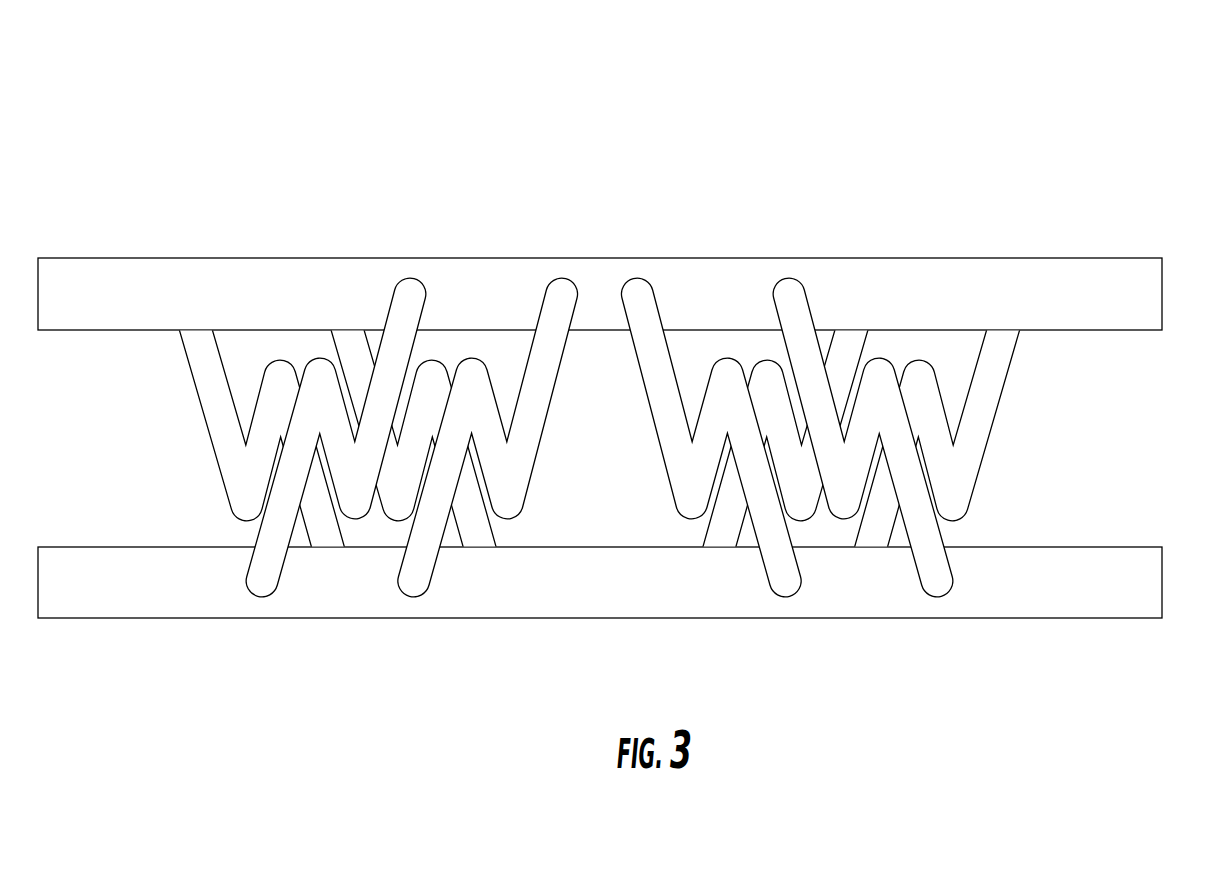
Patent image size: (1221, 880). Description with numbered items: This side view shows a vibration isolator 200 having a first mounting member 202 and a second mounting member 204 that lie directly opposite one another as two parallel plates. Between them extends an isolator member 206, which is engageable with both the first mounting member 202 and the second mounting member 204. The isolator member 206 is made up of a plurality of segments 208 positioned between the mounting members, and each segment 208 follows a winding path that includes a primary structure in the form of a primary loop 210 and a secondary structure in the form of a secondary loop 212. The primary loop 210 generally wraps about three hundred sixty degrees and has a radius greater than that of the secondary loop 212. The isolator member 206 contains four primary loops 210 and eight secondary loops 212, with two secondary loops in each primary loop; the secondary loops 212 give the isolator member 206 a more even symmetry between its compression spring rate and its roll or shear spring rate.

The vibration isolator 200 is at (619, 341).
The first mounting member 202 is at (1013, 280).
The second mounting member 204 is at (1115, 567).
The isolator member 206 is at (789, 432).
The segment 208 is at (640, 330).
The primary loop 210 is at (374, 376).
The secondary loop 212 is at (277, 382).